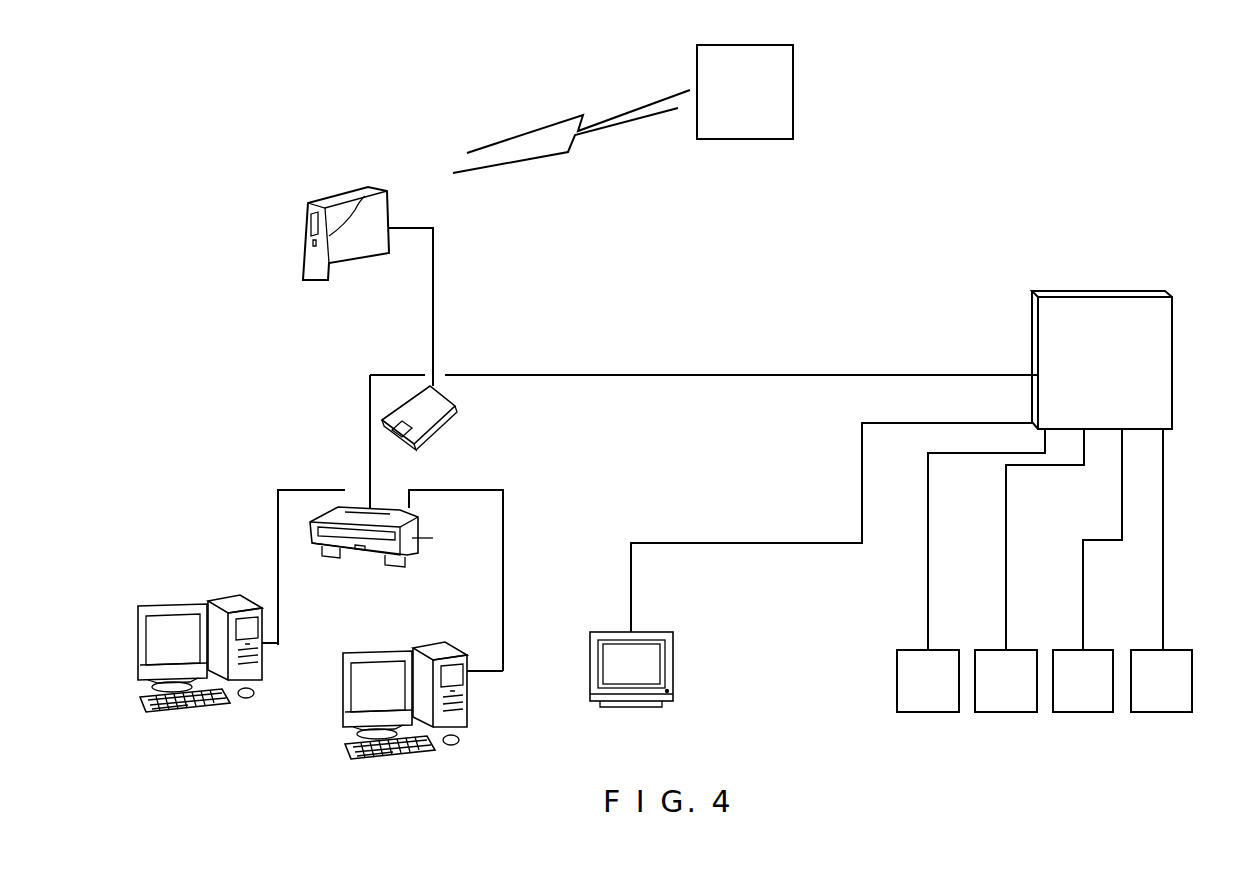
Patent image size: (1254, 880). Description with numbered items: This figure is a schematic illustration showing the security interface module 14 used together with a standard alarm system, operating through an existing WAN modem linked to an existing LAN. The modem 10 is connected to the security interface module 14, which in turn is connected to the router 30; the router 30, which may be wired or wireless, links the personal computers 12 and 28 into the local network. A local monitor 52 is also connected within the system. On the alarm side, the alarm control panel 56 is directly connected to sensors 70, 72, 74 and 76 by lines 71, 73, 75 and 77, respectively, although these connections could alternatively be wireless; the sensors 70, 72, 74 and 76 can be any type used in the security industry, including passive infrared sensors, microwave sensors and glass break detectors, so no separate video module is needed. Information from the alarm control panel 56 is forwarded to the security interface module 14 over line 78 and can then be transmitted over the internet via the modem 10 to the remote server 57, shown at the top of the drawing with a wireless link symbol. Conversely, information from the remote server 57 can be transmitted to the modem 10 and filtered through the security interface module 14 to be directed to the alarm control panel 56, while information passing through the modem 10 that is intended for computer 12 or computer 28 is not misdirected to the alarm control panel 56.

The modem 10 is at (343, 188).
The personal computer 12 is at (468, 712).
The security interface module 14 is at (443, 422).
The personal computer 28 is at (262, 668).
The router 30 is at (415, 548).
The local monitor 52 is at (673, 683).
The alarm control panel 56 is at (1095, 291).
The remote server 57 is at (793, 96).
The sensor 70 is at (932, 712).
The line 71 is at (928, 518).
The sensor 72 is at (1010, 712).
The line 73 is at (1006, 518).
The sensor 74 is at (1090, 712).
The line 75 is at (1084, 565).
The sensor 76 is at (1165, 712).
The line 77 is at (1163, 565).
The line 78 is at (670, 375).